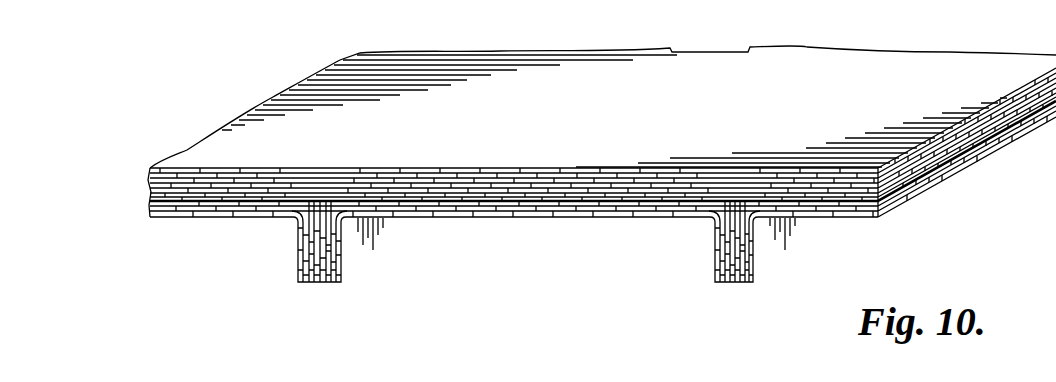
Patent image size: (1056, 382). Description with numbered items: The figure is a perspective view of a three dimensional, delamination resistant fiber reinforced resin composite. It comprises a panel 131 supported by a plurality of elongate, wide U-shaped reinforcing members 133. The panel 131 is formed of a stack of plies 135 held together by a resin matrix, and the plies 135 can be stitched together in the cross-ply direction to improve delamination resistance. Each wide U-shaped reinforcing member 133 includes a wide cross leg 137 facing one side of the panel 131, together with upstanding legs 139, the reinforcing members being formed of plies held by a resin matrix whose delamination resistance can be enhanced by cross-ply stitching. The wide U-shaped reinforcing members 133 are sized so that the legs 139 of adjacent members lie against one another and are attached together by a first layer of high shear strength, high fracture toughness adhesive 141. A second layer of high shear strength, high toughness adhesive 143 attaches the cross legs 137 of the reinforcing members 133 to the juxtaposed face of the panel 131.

The panel 131 is at (592, 115).
The wide U-shaped reinforcing members 133 is at (203, 232).
The plies 135 is at (398, 184).
The wide cross leg 137 is at (172, 218).
The stiffener flange plies 139 is at (293, 266).
The first layer of high shear strength, high fracture toughness adhesive 141 is at (320, 282).
The second layer of high shear strength, high toughness adhesive 143 is at (620, 201).